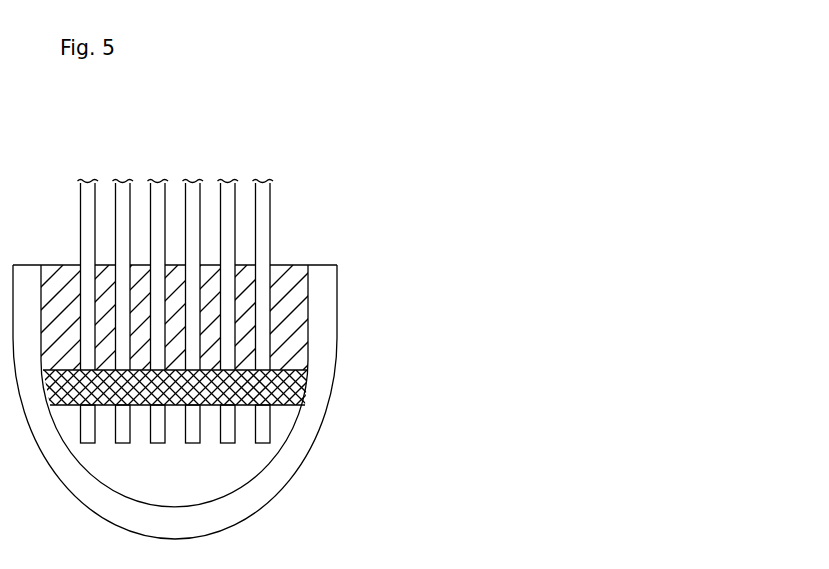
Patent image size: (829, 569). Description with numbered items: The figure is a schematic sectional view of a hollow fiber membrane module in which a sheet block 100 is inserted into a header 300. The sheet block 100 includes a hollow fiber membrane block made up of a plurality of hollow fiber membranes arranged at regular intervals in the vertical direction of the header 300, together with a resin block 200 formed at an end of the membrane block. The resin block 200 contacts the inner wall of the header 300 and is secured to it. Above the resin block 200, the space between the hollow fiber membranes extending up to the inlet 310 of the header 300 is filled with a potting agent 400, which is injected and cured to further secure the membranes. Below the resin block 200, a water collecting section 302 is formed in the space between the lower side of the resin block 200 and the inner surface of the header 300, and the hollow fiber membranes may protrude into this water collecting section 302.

The sheet block 100 is at (280, 194).
The resin block 200 is at (303, 393).
The header 300 is at (322, 338).
The water collecting section 302 is at (243, 458).
The inlet 310 is at (325, 265).
The potting agent 400 is at (302, 315).